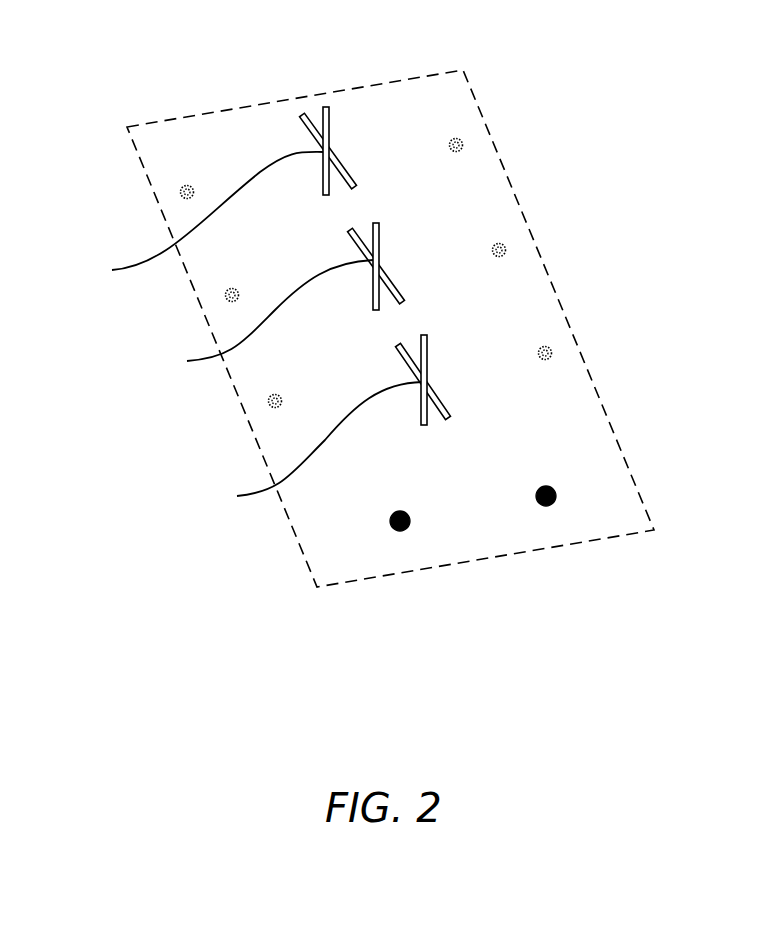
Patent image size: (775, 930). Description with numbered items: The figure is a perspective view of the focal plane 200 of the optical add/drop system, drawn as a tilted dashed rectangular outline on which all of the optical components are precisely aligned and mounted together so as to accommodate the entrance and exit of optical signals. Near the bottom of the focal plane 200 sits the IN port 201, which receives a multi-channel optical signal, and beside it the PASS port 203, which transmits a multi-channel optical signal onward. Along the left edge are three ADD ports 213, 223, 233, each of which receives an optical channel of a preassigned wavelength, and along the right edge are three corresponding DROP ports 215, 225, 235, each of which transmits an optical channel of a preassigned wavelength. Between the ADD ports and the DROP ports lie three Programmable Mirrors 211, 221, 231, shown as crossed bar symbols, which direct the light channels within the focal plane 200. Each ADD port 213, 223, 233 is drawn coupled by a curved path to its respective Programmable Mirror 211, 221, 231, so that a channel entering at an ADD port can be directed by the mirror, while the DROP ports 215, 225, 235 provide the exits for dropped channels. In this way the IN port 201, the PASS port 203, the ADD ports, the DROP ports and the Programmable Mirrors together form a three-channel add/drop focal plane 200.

The focal plane 200 is at (348, 90).
The IN port 201 is at (390, 522).
The PASS port 203 is at (556, 494).
The Programmable Mirror 211 is at (208, 199).
The ADD port 213 is at (180, 193).
The DROP port 215 is at (465, 143).
The Programmable Mirror 221 is at (272, 303).
The ADD port 223 is at (225, 296).
The DROP port 225 is at (508, 248).
The Programmable Mirror 231 is at (320, 425).
The ADD port 233 is at (268, 402).
The DROP port 235 is at (553, 351).